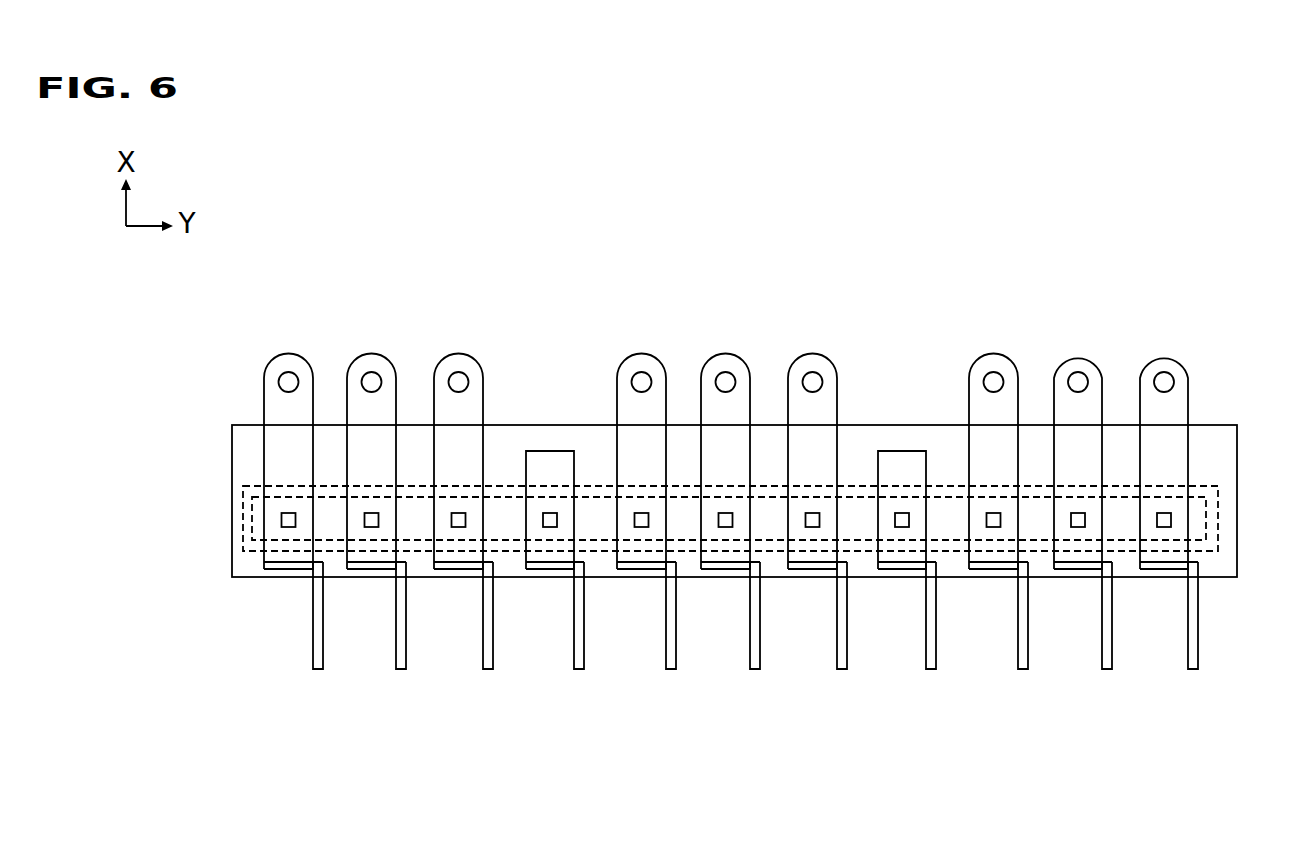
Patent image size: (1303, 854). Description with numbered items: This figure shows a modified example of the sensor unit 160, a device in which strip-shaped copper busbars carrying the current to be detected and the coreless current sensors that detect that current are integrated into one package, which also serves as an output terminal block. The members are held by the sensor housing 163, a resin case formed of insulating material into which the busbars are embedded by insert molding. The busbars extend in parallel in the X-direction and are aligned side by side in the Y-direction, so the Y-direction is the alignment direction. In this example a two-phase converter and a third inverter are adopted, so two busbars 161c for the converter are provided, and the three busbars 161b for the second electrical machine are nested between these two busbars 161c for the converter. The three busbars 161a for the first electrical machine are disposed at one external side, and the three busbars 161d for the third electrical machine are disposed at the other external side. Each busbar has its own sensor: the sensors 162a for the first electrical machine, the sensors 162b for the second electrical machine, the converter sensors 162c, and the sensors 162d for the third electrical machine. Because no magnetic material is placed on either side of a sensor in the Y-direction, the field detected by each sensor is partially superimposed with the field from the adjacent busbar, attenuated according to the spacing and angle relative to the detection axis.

The sensor unit 160 is at (1231, 422).
The sensor housing 163 is at (1220, 448).
The sensor for the first electrical machine 162a is at (288, 508).
The sensor for the second electrical machine 162b is at (642, 508).
The converter sensor 162c is at (550, 508).
The sensor for the third electrical machine 162d is at (994, 508).
The busbar for the first electrical machine 161a is at (313, 669).
The busbar for the second electrical machine 161b is at (666, 669).
The busbar for the converter 161c is at (574, 669).
The busbar for the third electrical machine 161d is at (1018, 669).